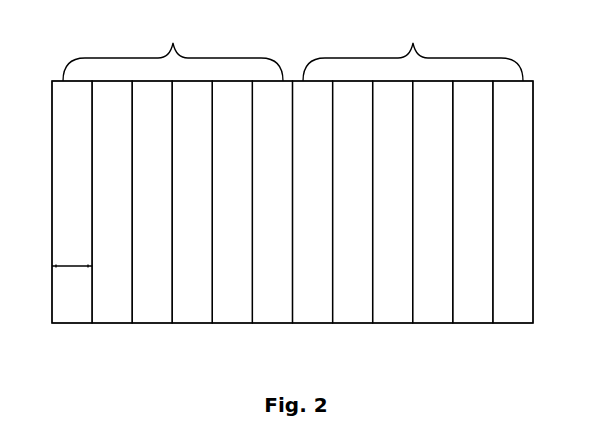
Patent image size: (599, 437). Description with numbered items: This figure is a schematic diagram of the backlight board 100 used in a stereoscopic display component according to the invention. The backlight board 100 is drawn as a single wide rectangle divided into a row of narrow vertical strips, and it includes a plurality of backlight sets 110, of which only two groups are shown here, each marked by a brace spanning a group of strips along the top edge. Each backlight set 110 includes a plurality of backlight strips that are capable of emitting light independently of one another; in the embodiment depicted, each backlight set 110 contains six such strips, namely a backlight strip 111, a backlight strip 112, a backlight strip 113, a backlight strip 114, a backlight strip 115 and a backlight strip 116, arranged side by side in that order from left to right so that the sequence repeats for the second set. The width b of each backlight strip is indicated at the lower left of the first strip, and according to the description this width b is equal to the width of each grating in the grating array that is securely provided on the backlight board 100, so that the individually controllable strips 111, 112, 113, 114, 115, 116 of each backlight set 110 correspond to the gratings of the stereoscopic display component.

The backlight board 100 is at (315, 356).
The backlight set 110 is at (293, 49).
The backlight strip 111 is at (55, 190).
The backlight strip 112 is at (95, 190).
The backlight strip 113 is at (135, 190).
The backlight strip 114 is at (175, 190).
The backlight strip 115 is at (215, 190).
The backlight strip 116 is at (255, 190).
The width of each backlight strip b is at (72, 256).